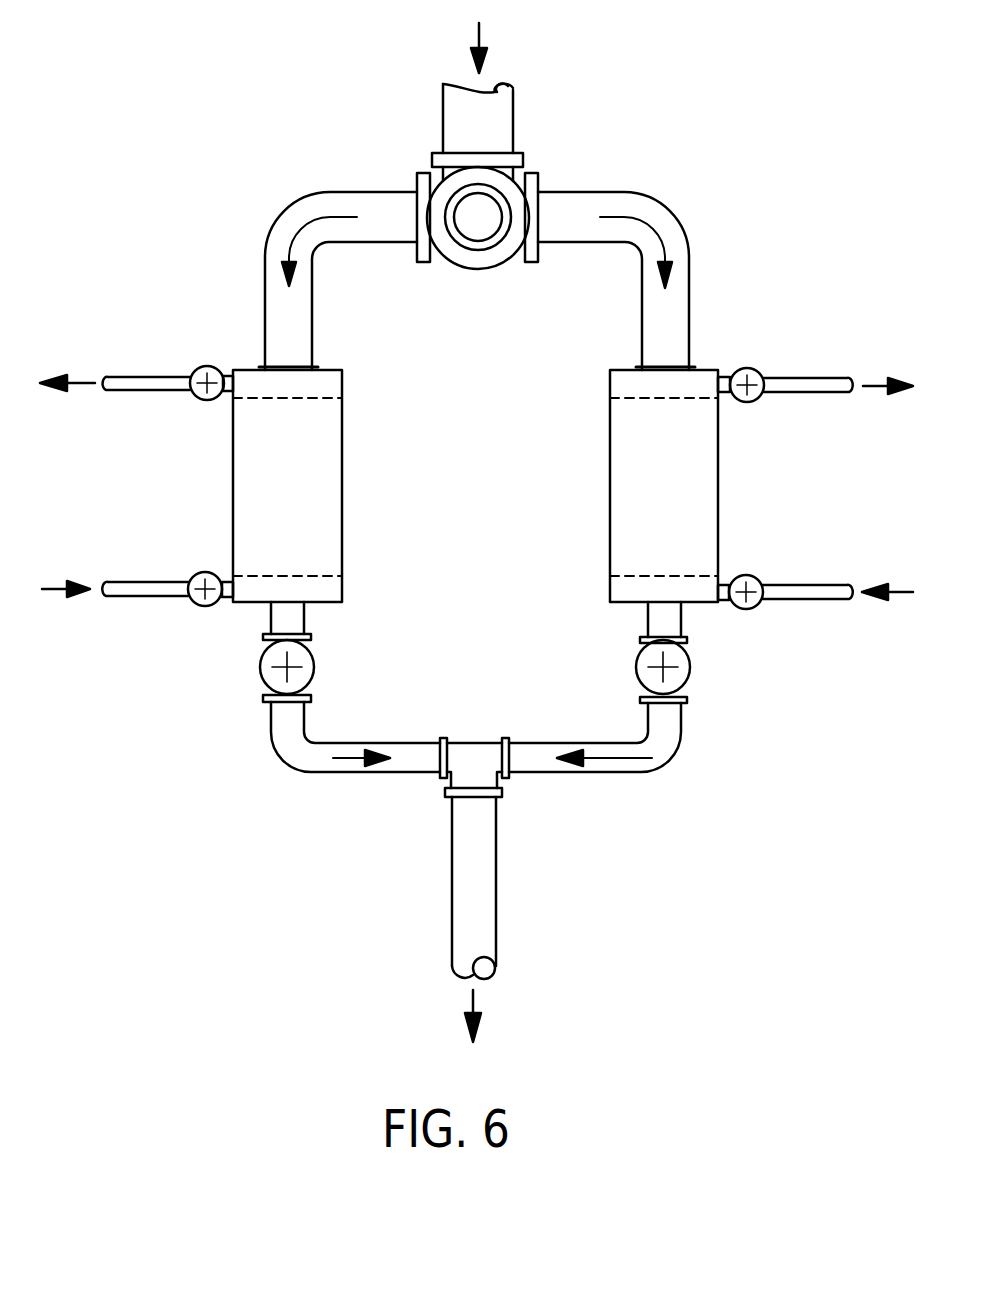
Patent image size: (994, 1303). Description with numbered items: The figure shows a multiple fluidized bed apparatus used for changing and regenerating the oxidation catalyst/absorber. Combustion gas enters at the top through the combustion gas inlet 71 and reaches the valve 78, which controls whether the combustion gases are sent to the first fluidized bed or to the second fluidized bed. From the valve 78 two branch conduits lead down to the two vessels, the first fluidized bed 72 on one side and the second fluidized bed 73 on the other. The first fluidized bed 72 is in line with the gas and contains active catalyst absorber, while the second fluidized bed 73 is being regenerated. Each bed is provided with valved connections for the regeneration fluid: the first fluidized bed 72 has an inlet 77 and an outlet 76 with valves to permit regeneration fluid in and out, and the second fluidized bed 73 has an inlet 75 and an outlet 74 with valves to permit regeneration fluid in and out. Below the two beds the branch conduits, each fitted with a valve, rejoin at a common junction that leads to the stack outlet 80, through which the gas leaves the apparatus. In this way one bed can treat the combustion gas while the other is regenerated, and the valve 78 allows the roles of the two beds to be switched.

The combustion gas inlet 71 is at (513, 115).
The first fluidized bed 72 is at (268, 503).
The second fluidized bed 73 is at (649, 503).
The outlet 74 is at (743, 368).
The inlet 75 is at (743, 610).
The outlet 76 is at (212, 365).
The inlet 77 is at (207, 607).
The valve 78 is at (475, 225).
The stack outlet 80 is at (496, 883).